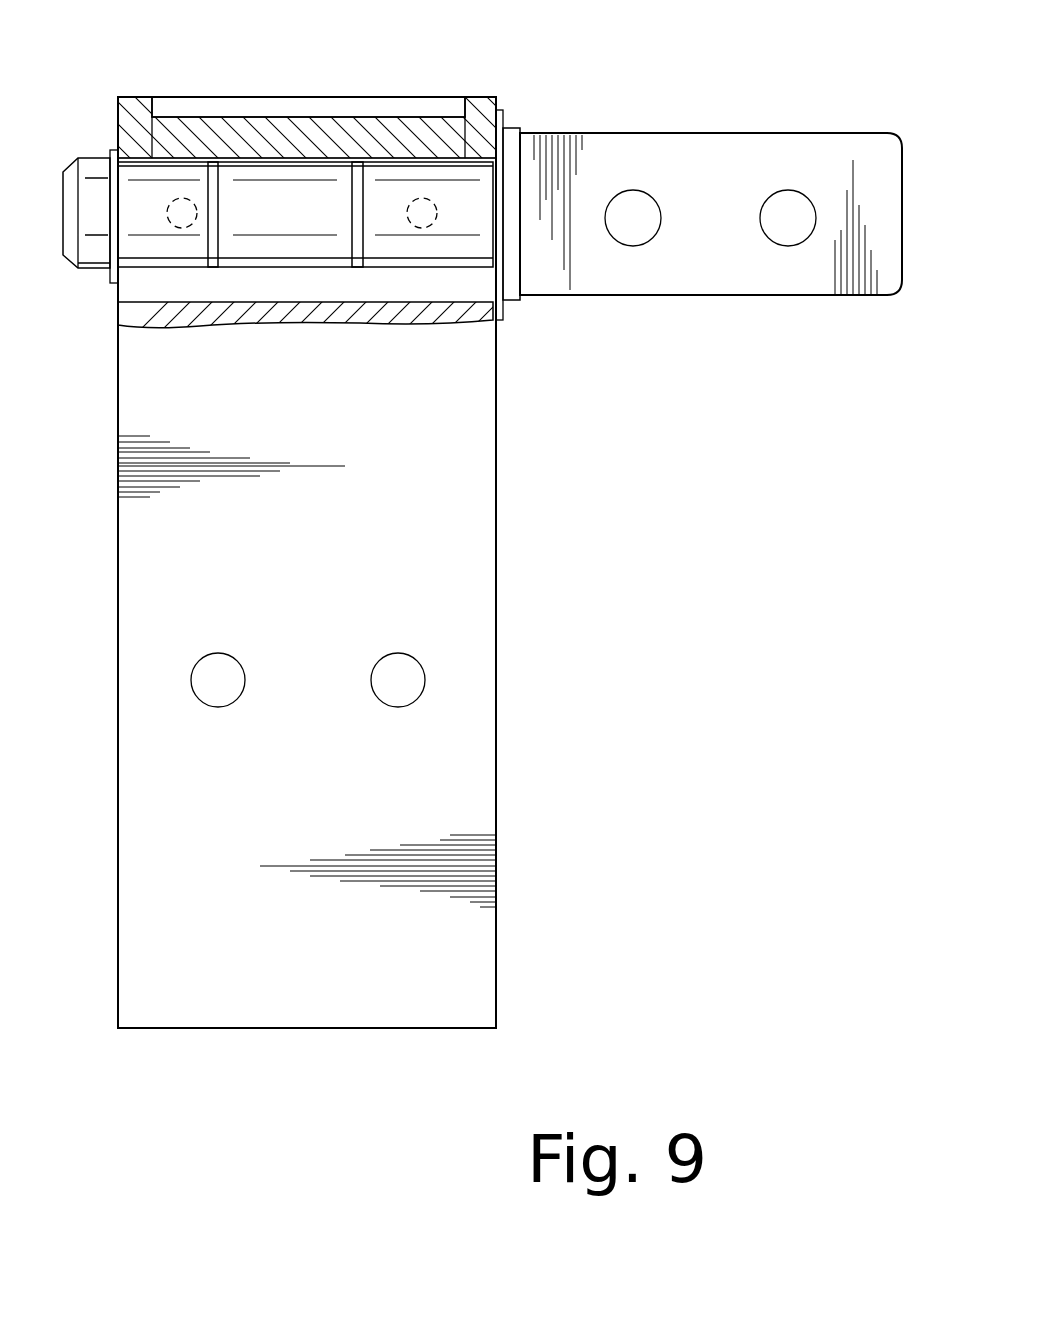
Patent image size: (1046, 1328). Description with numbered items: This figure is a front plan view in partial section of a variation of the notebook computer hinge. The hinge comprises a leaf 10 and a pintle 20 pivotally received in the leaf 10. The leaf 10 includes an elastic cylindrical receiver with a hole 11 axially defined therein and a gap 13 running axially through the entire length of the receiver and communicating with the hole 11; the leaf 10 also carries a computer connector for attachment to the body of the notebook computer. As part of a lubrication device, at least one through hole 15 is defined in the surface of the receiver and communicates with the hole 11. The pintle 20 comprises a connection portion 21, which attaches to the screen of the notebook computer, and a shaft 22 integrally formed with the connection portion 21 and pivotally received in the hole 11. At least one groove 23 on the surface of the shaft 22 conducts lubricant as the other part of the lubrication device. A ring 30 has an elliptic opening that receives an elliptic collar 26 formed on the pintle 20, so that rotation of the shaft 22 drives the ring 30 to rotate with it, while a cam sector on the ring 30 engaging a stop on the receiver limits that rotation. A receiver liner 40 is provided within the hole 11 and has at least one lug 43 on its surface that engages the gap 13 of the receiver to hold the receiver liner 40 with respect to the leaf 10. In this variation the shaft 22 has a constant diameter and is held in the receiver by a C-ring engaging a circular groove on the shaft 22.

The leaf 10 is at (538, 630).
The hole 11 is at (436, 113).
The gap 13 is at (372, 110).
The through hole 15 is at (430, 203).
The pintle 20 is at (711, 147).
The connection portion 21 is at (715, 150).
The shaft 22 is at (293, 245).
The groove 23 is at (212, 270).
The elliptic collar 26 is at (113, 282).
The ring 30 is at (520, 95).
The receiver liner 40 is at (190, 128).
The lug 43 is at (133, 100).